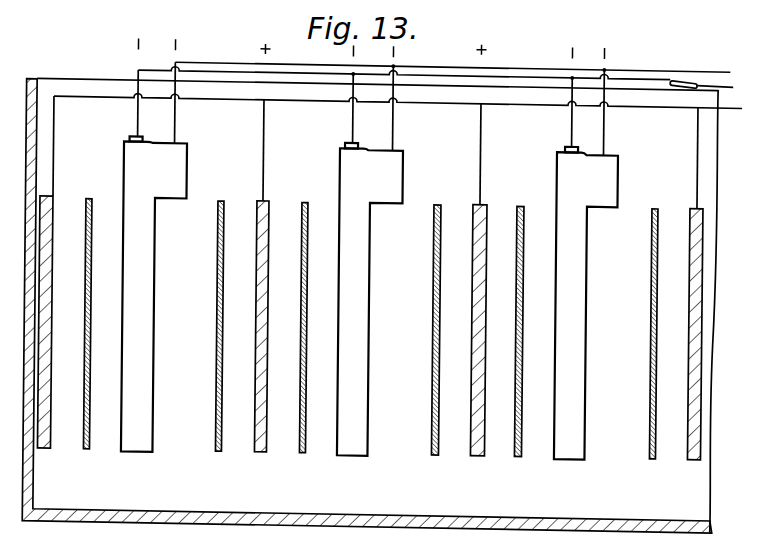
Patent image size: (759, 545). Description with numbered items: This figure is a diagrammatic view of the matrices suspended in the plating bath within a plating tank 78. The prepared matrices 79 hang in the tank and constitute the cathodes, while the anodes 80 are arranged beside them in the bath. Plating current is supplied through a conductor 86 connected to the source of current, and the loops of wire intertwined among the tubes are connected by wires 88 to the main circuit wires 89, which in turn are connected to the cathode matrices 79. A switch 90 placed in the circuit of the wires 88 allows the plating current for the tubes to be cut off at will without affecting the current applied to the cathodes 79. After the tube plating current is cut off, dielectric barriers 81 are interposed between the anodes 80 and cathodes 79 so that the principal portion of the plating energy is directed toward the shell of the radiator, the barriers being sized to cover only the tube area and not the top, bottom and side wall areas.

The plating tank 78 is at (35, 142).
The matrix 79 is at (369, 298).
The anode 80 is at (52, 202).
The dielectric barrier 81 is at (220, 203).
The conductor 86 is at (136, 120).
The wire 88 is at (228, 87).
The main circuit wire 89 is at (705, 66).
The switch 90 is at (668, 77).